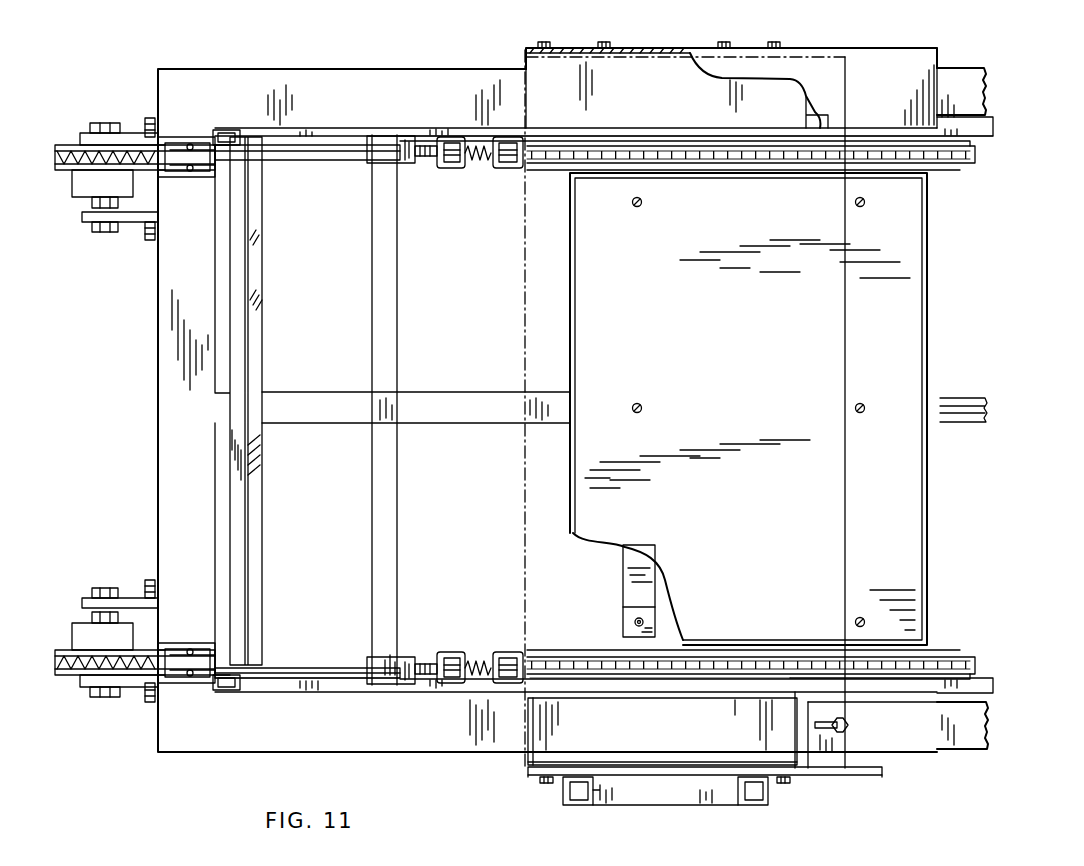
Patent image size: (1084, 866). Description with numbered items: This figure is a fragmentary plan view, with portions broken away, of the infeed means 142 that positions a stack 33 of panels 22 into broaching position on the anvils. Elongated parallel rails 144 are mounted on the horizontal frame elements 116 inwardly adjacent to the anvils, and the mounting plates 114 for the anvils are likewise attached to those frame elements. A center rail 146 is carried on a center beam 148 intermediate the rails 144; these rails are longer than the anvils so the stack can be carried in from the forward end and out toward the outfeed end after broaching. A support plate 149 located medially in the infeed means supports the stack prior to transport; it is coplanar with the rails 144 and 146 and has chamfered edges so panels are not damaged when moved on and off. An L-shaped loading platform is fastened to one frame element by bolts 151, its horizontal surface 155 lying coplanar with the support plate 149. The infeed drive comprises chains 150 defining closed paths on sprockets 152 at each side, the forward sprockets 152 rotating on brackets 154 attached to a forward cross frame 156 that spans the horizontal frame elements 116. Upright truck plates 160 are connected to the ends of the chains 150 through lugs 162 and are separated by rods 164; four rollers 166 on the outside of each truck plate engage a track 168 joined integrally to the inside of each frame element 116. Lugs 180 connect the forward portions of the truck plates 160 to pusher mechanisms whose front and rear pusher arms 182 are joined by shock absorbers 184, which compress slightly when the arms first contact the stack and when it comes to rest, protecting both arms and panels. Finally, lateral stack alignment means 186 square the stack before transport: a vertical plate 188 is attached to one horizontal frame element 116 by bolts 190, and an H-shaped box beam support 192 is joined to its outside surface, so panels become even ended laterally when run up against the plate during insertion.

The panels 22 is at (817, 57).
The stack of panels 33 is at (522, 364).
The mounting plates 114 is at (963, 80).
The horizontal frame elements 116 is at (404, 84).
The infeed means 142 is at (453, 630).
The rails 144 is at (980, 130).
The center rail 146 is at (957, 412).
The center beam 148 is at (456, 415).
The support plate 149 is at (913, 345).
The chains 150 is at (548, 163).
The bolts 151 is at (773, 41).
The sprockets 152 is at (70, 144).
The brackets 154 is at (135, 137).
The horizontal surface 155 is at (875, 73).
The forward cross frame 156 is at (163, 352).
The truck plates 160 is at (327, 152).
The lugs 162 is at (205, 145).
The rods 164 is at (262, 518).
The rollers 166 is at (230, 130).
The track 168 is at (932, 136).
The lugs 180 is at (417, 150).
The pusher arms 182 is at (512, 170).
The shock absorbers 184 is at (480, 165).
The lateral stack alignment means 186 is at (806, 782).
The vertical plate 188 is at (867, 775).
The bolts 190 is at (545, 783).
The H-shaped box beam support 192 is at (636, 797).